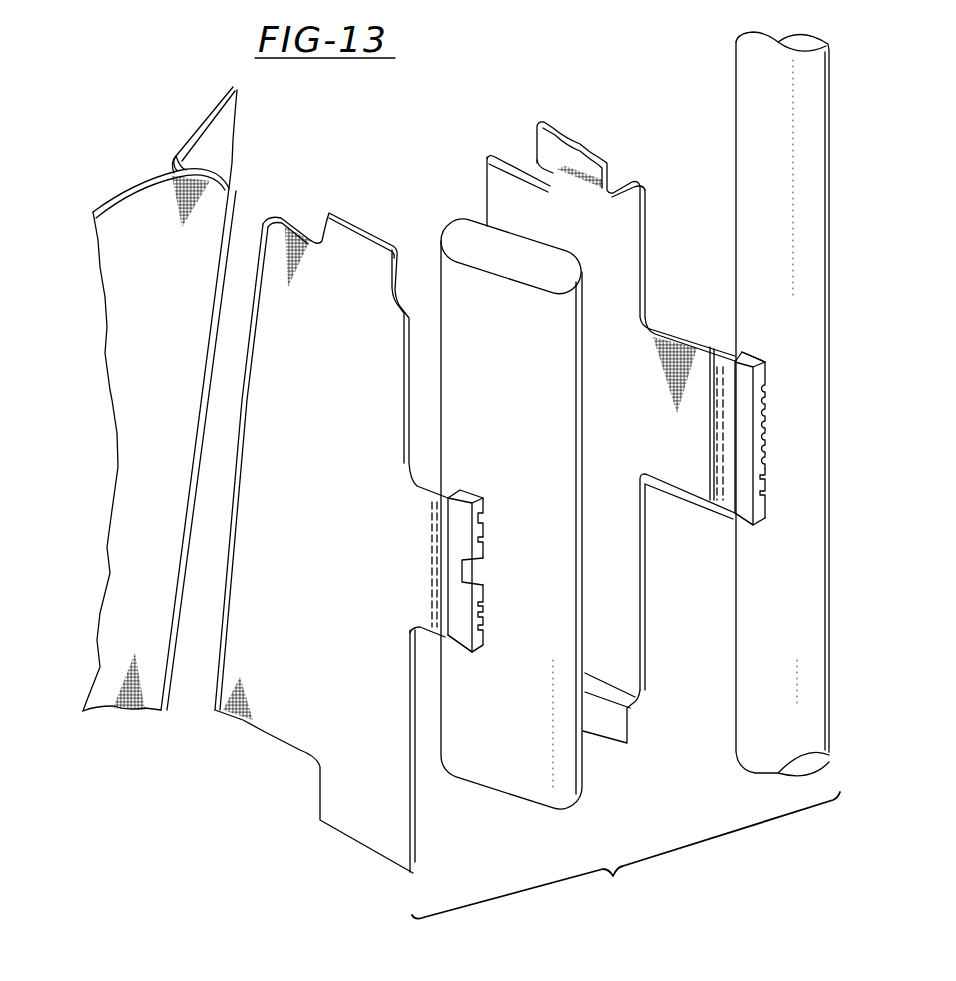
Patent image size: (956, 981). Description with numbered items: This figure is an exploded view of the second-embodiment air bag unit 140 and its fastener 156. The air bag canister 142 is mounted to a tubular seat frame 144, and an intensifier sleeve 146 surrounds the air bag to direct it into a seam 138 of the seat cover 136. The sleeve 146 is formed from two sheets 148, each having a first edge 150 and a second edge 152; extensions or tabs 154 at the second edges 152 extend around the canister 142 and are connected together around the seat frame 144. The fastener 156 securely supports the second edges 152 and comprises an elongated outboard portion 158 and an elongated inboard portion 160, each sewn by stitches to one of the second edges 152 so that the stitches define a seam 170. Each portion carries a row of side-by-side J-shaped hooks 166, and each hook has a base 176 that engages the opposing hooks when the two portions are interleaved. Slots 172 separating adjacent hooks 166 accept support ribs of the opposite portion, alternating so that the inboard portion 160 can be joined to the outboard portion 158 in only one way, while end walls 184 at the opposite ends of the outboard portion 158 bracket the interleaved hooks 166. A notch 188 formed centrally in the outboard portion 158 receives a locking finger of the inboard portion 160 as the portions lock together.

The cover 136 is at (218, 134).
The seam 138 is at (230, 181).
The air bag unit 140 is at (470, 116).
The air bag canister 142 is at (467, 243).
The seat frame 144 is at (755, 92).
The intensifier sleeve 146 is at (442, 501).
The sheet 148 is at (308, 707).
The first end or edge 150 is at (227, 658).
The second end or edge 152 is at (410, 808).
The extension or tab 154 is at (421, 497).
The fastener 156 is at (614, 499).
The outboard portion 158 is at (485, 517).
The inboard portion 160 is at (740, 380).
The J-shaped hook 166 is at (484, 613).
The seam 170 is at (430, 547).
The slot 172 is at (460, 533).
The base 176 is at (478, 633).
The end wall 184 is at (753, 357).
The notch 188 is at (465, 573).